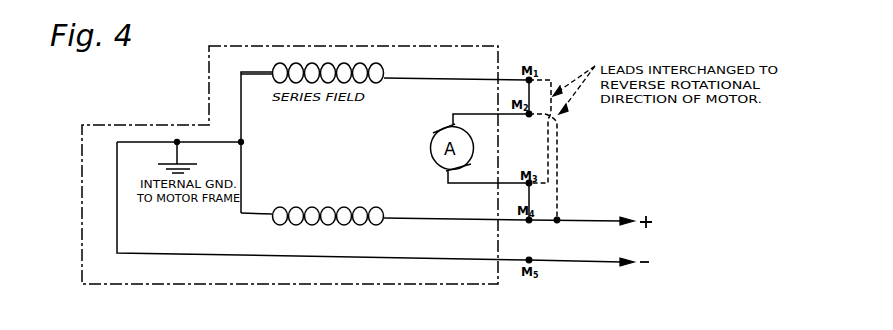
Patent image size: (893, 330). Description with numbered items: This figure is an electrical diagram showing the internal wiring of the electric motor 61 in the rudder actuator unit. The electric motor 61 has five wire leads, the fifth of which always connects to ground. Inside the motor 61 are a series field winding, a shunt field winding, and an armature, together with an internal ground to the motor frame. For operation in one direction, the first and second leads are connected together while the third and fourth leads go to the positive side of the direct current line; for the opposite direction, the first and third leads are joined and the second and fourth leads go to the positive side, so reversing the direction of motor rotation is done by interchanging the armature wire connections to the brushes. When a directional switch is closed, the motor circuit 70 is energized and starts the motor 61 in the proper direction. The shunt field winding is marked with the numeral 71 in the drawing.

The electric motor 61 is at (398, 285).
The motor circuit 70 is at (587, 223).
The shunt field winding 71 is at (385, 227).